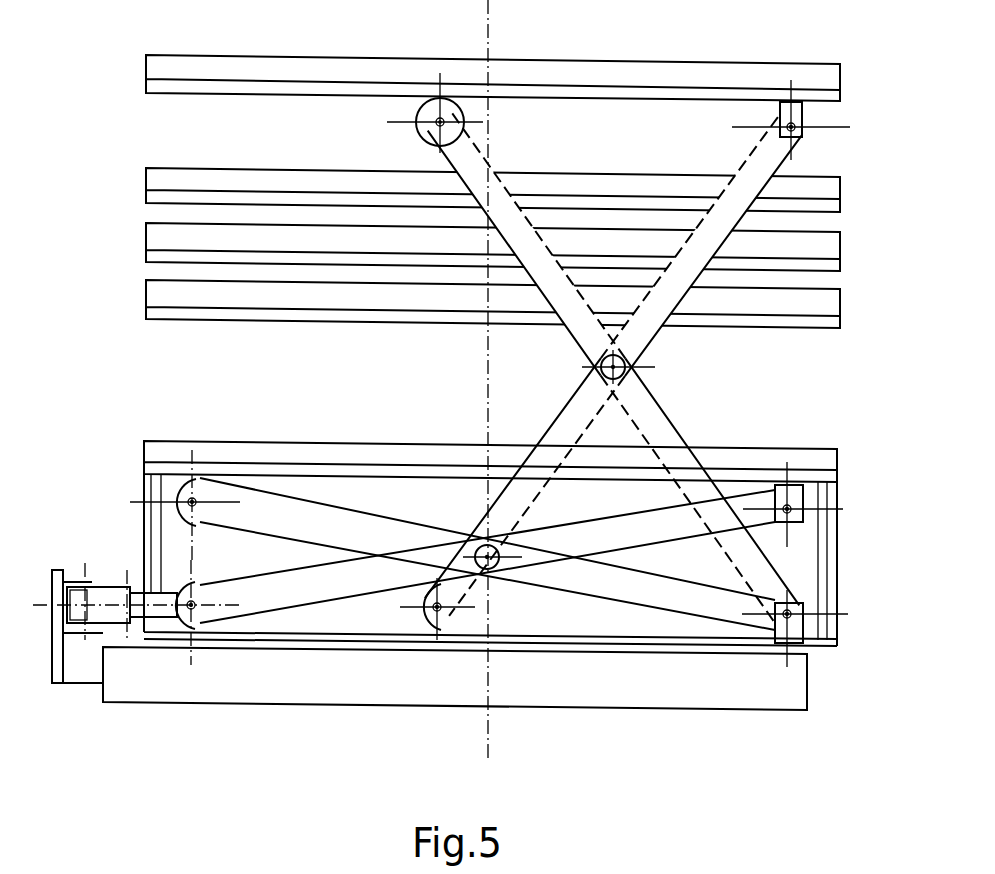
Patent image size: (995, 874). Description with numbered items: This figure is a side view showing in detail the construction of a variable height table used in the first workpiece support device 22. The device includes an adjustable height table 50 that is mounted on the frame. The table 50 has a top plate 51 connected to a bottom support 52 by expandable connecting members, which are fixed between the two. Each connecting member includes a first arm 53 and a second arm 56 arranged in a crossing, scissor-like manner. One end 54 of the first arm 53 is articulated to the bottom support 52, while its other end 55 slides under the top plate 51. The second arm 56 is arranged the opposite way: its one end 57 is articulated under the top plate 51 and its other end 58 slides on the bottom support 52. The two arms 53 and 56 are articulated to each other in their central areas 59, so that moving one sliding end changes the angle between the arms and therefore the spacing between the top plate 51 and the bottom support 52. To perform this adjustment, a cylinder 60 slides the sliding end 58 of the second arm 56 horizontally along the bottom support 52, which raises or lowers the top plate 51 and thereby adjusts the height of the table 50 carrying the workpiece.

The first workpiece support device 22 is at (190, 388).
The adjustable height table 50 is at (263, 453).
The top plate 51 is at (394, 430).
The bottom support 52 is at (152, 683).
The first arm 53 is at (652, 583).
The end of first arm 54 is at (795, 617).
The end of first arm 55 is at (187, 488).
The second arm 56 is at (305, 590).
The end of second arm 57 is at (765, 523).
The sliding end of second arm 58 is at (205, 622).
The central areas 59 is at (485, 565).
The cylinder 60 is at (110, 595).